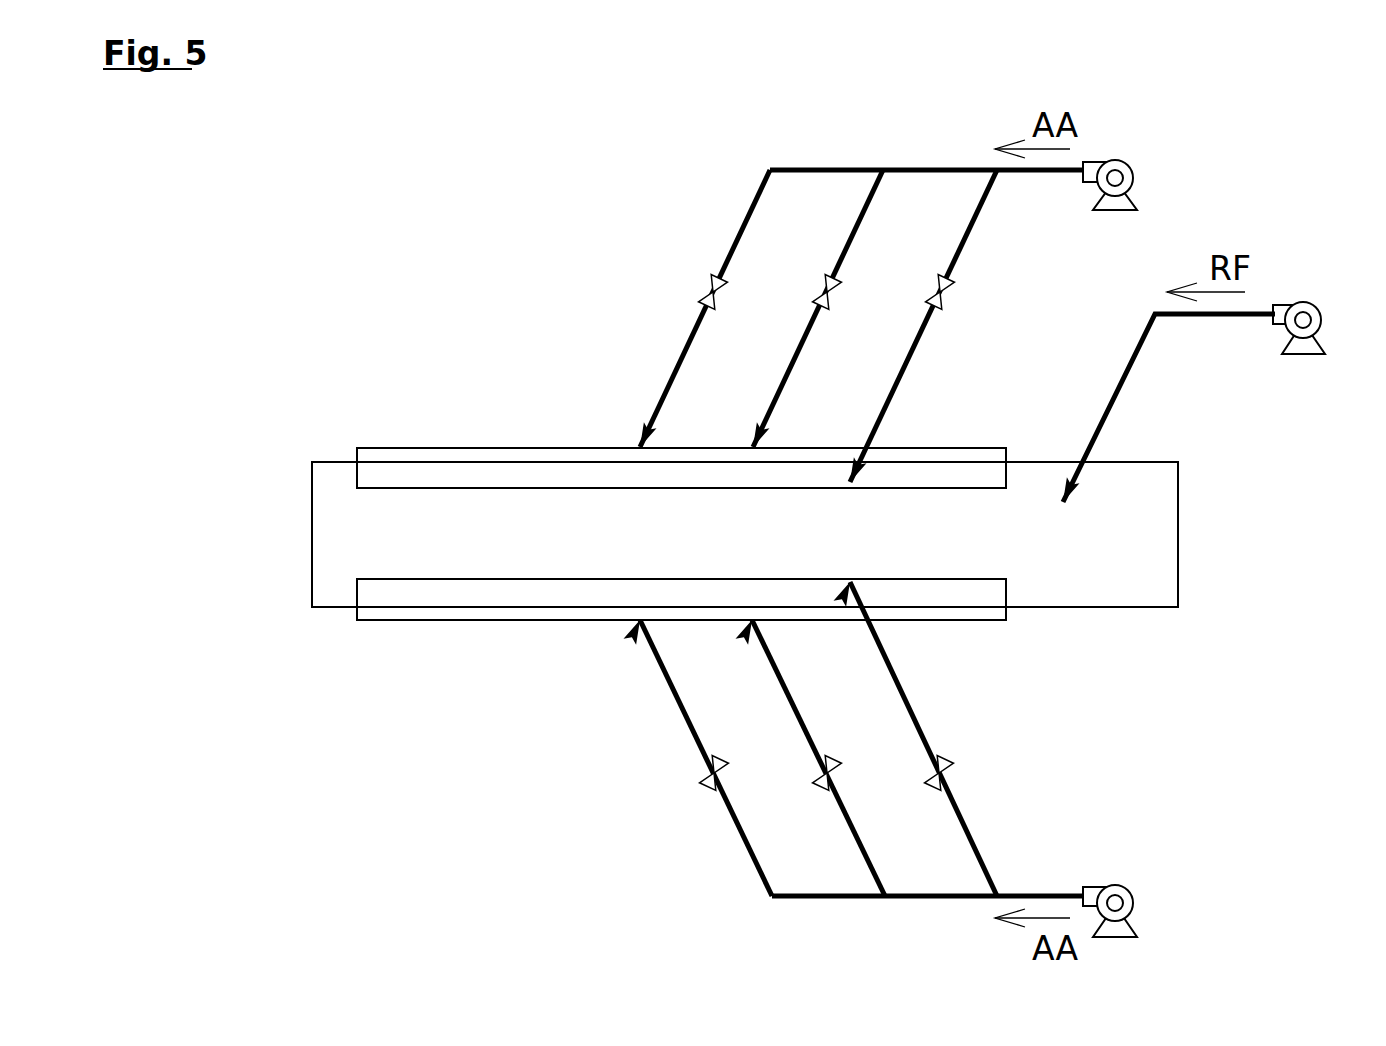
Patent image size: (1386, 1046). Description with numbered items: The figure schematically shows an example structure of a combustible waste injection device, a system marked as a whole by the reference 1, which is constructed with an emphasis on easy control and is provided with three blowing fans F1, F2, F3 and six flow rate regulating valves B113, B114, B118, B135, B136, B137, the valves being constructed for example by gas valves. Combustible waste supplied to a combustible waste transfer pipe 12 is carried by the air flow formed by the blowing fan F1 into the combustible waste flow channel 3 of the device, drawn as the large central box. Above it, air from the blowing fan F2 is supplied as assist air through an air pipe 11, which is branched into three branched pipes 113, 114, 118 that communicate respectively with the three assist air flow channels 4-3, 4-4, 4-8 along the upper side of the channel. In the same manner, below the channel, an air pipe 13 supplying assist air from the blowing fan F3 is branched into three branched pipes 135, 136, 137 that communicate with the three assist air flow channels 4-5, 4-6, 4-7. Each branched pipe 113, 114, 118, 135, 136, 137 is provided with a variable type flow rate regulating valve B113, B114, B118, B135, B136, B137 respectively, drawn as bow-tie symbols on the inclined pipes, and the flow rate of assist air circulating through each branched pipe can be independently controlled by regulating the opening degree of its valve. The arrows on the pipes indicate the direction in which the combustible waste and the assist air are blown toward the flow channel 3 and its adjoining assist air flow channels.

The fuel cell system 1 is at (267, 204).
The combustible waste flow channel 3 is at (1152, 518).
The assist air flow channel 4-3 is at (473, 457).
The assist air flow channel 4-4 is at (418, 472).
The assist air flow channel 4-5 is at (420, 595).
The assist air flow channel 4-6 is at (498, 612).
The assist air flow channel 4-7 is at (637, 623).
The assist air flow channel 4-8 is at (637, 445).
The air pipe 11 is at (1030, 175).
The combustible waste transfer pipe 12 is at (1225, 318).
The air pipe 13 is at (1028, 890).
The branched pipe 113 is at (808, 340).
The branched pipe 114 is at (921, 340).
The branched pipe 118 is at (706, 340).
The branched pipe 135 is at (922, 728).
The branched pipe 136 is at (808, 728).
The branched pipe 137 is at (697, 728).
The flow rate regulating valve B113 is at (845, 285).
The flow rate regulating valve B114 is at (954, 300).
The flow rate regulating valve B118 is at (708, 280).
The flow rate regulating valve B135 is at (950, 775).
The flow rate regulating valve B136 is at (838, 790).
The flow rate regulating valve B137 is at (703, 788).
The blowing fan F1 is at (1317, 303).
The blowing fan F2 is at (1133, 178).
The blowing fan F3 is at (1133, 907).